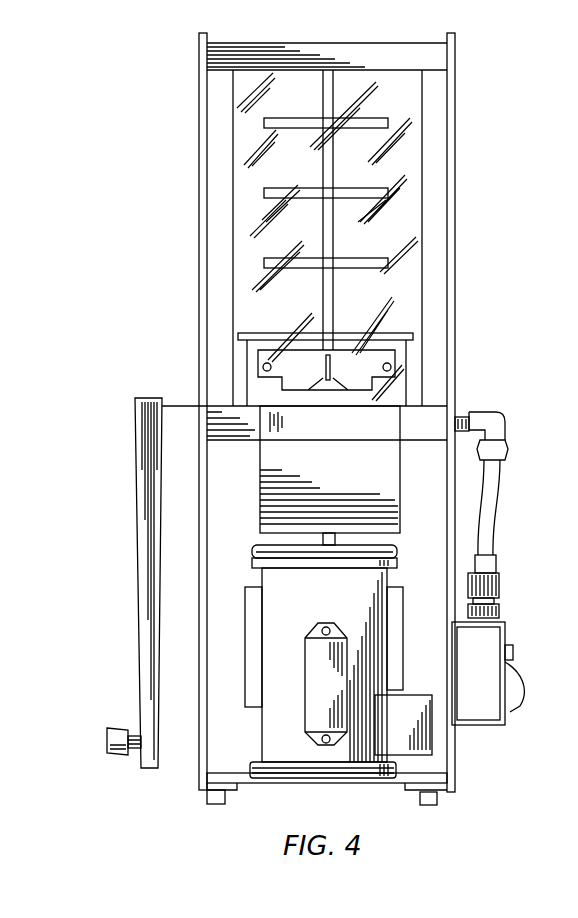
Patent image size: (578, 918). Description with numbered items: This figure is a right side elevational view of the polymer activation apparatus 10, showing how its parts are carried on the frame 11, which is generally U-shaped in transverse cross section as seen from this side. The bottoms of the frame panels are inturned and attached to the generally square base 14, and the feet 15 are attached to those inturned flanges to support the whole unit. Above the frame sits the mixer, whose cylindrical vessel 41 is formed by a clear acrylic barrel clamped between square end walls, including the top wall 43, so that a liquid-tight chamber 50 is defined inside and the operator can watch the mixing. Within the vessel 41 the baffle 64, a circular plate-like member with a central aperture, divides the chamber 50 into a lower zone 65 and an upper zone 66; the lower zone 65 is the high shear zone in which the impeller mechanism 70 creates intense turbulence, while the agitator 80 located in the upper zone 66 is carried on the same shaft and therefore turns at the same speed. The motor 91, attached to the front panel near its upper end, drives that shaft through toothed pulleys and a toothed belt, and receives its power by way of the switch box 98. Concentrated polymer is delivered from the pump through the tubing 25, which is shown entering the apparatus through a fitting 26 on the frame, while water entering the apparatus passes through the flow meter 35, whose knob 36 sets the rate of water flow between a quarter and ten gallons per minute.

The polymer activation apparatus 10 is at (515, 138).
The frame 11 is at (458, 278).
The base 14 is at (406, 783).
The feet 15 is at (207, 797).
The tubing 25 is at (488, 535).
The elbow fitting 26 is at (495, 423).
The flow meter 35 is at (137, 486).
The knob 36 is at (115, 733).
The cylindrical vessel 41 is at (427, 125).
The top wall 43 is at (440, 53).
The chamber 50 is at (245, 270).
The baffle 64 is at (410, 330).
The lower zone 65 is at (415, 391).
The upper zone 66 is at (412, 225).
The impeller mechanism 70 is at (374, 346).
The agitator 80 is at (295, 284).
The motor 91 is at (290, 755).
The switch box 98 is at (487, 728).